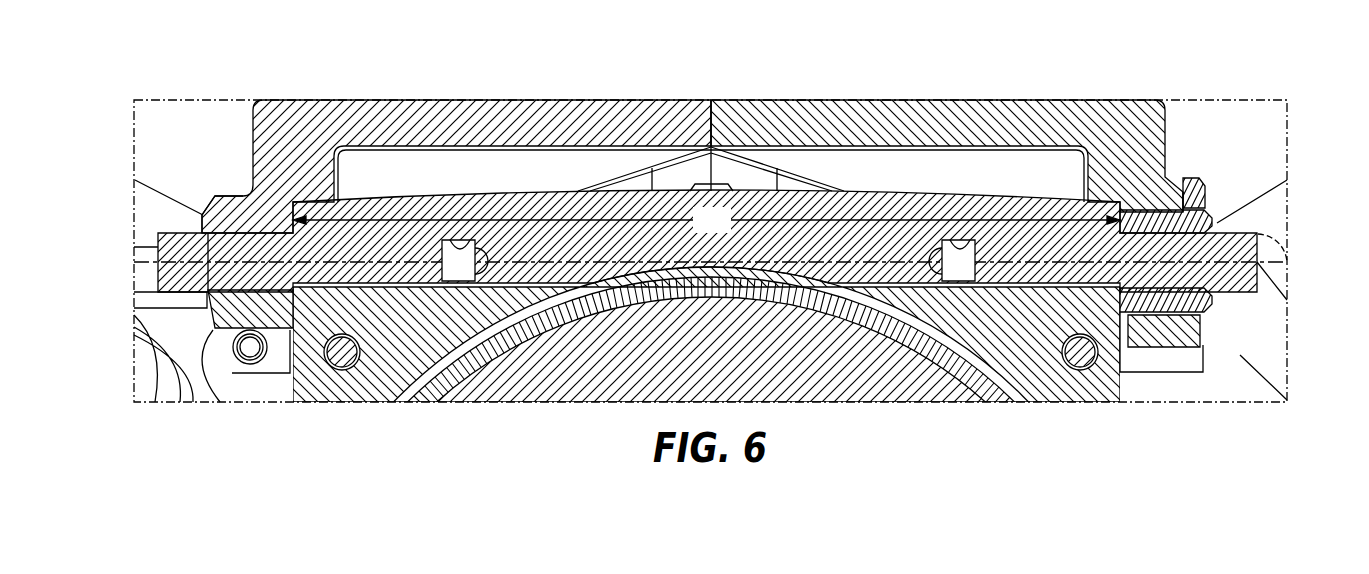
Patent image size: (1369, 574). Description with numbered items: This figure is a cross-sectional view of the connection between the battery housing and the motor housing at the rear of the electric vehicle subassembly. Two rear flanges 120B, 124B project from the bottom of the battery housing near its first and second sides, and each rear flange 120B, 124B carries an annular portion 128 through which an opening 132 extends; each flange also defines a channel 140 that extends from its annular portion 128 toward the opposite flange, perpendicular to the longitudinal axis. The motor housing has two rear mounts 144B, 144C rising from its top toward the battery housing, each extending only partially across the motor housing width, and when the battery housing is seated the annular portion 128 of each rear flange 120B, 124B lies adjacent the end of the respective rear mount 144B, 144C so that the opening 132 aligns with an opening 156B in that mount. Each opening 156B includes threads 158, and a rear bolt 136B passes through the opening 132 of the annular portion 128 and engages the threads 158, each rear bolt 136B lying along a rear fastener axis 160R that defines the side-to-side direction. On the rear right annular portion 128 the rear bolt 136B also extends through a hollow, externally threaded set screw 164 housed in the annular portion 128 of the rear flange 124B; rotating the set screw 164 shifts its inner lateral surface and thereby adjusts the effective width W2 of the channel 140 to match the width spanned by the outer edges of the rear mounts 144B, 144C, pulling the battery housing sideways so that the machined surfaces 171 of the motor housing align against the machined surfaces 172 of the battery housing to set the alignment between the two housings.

The rear flange 120B is at (270, 200).
The rear flange 124B is at (1143, 187).
The annular portion 128 is at (1187, 183).
The opening 132 is at (258, 272).
The rear bolt 136B is at (242, 232).
The channel 140 is at (343, 215).
The rear mount 144B is at (439, 203).
The rear mount 144C is at (998, 203).
The opening 156B is at (465, 250).
The threads 158 is at (383, 287).
The rear fastener axis 160R is at (1272, 252).
The set screw 164 is at (1170, 270).
The machined surfaces 171 is at (278, 365).
The machined surfaces 172 is at (303, 300).
The width W2 is at (706, 221).